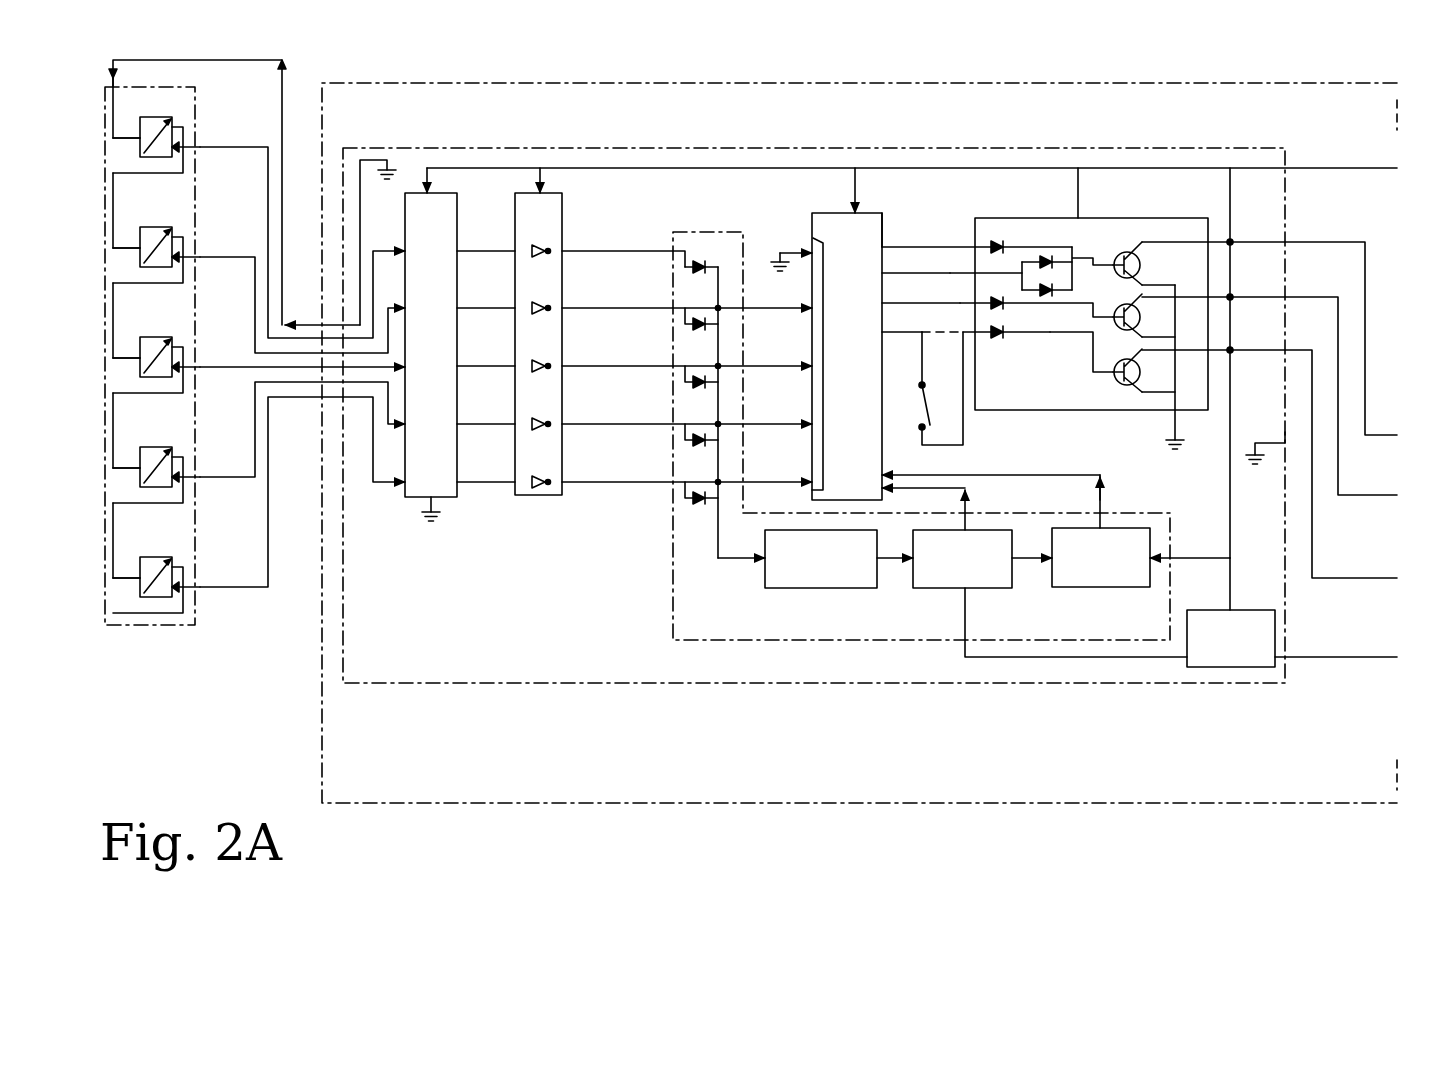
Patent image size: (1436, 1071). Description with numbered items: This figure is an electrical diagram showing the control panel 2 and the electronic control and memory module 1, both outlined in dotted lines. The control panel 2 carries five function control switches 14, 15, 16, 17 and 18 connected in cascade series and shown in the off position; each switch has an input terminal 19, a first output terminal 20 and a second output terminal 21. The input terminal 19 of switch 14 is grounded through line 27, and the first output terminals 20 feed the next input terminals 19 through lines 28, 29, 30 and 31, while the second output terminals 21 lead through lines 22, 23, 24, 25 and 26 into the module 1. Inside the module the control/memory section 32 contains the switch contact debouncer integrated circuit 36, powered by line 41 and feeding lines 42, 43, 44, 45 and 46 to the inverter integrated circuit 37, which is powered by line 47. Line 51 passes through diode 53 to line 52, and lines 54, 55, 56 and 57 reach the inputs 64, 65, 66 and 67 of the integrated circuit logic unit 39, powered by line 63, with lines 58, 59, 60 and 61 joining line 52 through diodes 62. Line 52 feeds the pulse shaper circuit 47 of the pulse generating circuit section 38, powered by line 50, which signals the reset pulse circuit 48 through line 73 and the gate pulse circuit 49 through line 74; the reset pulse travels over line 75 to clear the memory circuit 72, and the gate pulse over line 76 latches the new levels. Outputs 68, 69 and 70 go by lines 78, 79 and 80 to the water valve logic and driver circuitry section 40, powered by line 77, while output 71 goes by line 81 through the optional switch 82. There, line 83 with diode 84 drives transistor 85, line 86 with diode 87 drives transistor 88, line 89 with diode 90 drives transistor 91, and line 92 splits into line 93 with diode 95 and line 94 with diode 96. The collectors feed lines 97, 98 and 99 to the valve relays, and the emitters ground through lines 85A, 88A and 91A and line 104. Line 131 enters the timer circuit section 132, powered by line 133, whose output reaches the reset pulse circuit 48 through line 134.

The electronic control and memory module 1 is at (706, 83).
The control panel 2 is at (160, 628).
The function control switch 14 is at (140, 160).
The function control switch 15 is at (140, 270).
The function control switch 16 is at (140, 380).
The function control switch 17 is at (140, 490).
The function control switch 18 is at (140, 600).
The input terminal 19 is at (140, 150).
The first output terminal 20 is at (172, 118).
The second output terminal 21 is at (181, 153).
The line 22 is at (207, 147).
The line 23 is at (241, 257).
The line 24 is at (243, 372).
The line 25 is at (250, 485).
The line 26 is at (270, 573).
The line 27 is at (213, 60).
The line 28 is at (113, 183).
The line 29 is at (113, 293).
The line 30 is at (113, 403).
The line 31 is at (113, 513).
The control/memory section 32 is at (822, 683).
The switch contact debouncer integrated circuit 36 is at (405, 497).
The inverter integrated circuit 37 is at (540, 497).
The pulse generating circuit section 38 is at (675, 640).
The integrated circuit logic unit 39 is at (812, 497).
The water valve logic and driver circuitry section 40 is at (1037, 218).
The line 41 is at (1302, 168).
The line 42 is at (495, 248).
The line 43 is at (495, 305).
The line 44 is at (495, 363).
The line 45 is at (495, 421).
The line 46 is at (495, 479).
The pulse shaper circuit 47 is at (544, 174).
The reset pulse circuit 48 is at (968, 515).
The gate pulse circuit 49 is at (1130, 520).
The line 50 is at (1229, 198).
The line 51 is at (593, 248).
The line 52 is at (743, 238).
The diode 53 is at (690, 268).
The line 54 is at (593, 305).
The line 55 is at (593, 363).
The line 56 is at (593, 421).
The line 57 is at (593, 479).
The line 58 is at (688, 324).
The line 59 is at (688, 382).
The line 60 is at (688, 440).
The line 61 is at (688, 498).
The diodes 62 is at (686, 326).
The line 63 is at (855, 190).
The input 64 is at (810, 310).
The input 65 is at (810, 368).
The input 66 is at (810, 426).
The input 67 is at (810, 481).
The output 68 is at (876, 230).
The output 69 is at (866, 280).
The output 70 is at (864, 305).
The output 71 is at (882, 335).
The memory circuit 72 is at (813, 237).
The line 73 is at (893, 556).
The line 74 is at (1030, 556).
The line 75 is at (940, 475).
The line 76 is at (1016, 473).
The line 77 is at (1079, 193).
The line 78 is at (930, 247).
The line 79 is at (902, 273).
The line 80 is at (943, 303).
The line 81 is at (967, 438).
The switch 82 is at (920, 410).
The line 83 is at (1093, 256).
The diode 84 is at (997, 241).
The transistor 85 is at (1135, 252).
The line 85A is at (1205, 278).
The line 86 is at (1016, 303).
The diode 87 is at (1012, 322).
The transistor 88 is at (1140, 282).
The line 88A is at (1205, 333).
The line 89 is at (1068, 338).
The diode 90 is at (998, 340).
The transistor 91 is at (1120, 383).
The line 91A is at (1155, 393).
The line 92 is at (1010, 262).
The line 93 is at (1088, 258).
The line 94 is at (1062, 291).
The diode 95 is at (1040, 255).
The diode 96 is at (1038, 295).
The line 97 is at (1312, 242).
The line 98 is at (1297, 297).
The line 99 is at (1269, 464).
The line 104 is at (1185, 440).
The line 131 is at (1322, 657).
The timer circuit section 132 is at (1248, 667).
The line 133 is at (1232, 598).
The line 134 is at (1113, 657).